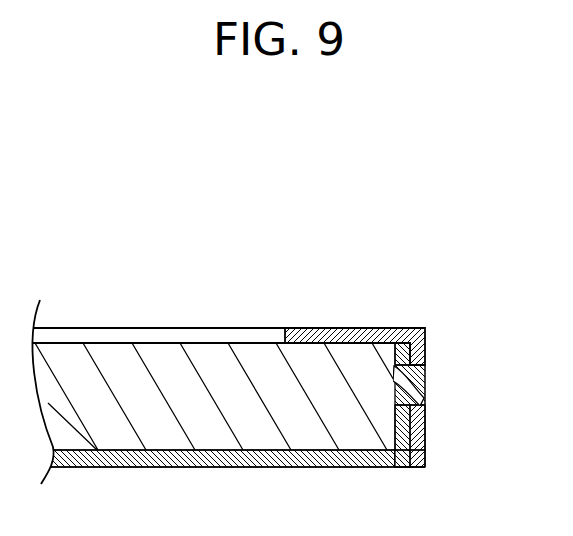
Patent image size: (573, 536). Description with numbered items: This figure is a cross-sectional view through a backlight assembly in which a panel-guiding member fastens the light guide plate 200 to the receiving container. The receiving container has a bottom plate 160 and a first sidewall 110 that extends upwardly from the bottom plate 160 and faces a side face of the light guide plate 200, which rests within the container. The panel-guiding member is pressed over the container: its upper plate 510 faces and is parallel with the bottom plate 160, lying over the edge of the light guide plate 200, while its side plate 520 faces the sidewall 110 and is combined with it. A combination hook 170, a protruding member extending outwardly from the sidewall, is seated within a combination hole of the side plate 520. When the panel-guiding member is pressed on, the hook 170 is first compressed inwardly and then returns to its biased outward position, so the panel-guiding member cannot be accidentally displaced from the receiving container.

The light guide plate 200 is at (224, 352).
The upper plate 510 is at (385, 328).
The combination hook 170 is at (412, 387).
The first sidewall 110 is at (425, 426).
The side plate 520 is at (418, 461).
The bottom plate 160 is at (305, 457).